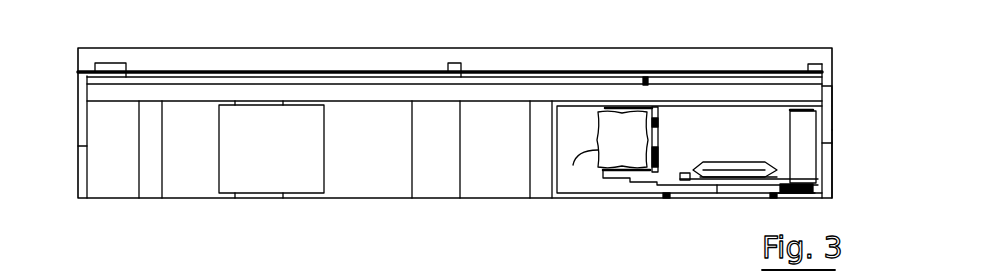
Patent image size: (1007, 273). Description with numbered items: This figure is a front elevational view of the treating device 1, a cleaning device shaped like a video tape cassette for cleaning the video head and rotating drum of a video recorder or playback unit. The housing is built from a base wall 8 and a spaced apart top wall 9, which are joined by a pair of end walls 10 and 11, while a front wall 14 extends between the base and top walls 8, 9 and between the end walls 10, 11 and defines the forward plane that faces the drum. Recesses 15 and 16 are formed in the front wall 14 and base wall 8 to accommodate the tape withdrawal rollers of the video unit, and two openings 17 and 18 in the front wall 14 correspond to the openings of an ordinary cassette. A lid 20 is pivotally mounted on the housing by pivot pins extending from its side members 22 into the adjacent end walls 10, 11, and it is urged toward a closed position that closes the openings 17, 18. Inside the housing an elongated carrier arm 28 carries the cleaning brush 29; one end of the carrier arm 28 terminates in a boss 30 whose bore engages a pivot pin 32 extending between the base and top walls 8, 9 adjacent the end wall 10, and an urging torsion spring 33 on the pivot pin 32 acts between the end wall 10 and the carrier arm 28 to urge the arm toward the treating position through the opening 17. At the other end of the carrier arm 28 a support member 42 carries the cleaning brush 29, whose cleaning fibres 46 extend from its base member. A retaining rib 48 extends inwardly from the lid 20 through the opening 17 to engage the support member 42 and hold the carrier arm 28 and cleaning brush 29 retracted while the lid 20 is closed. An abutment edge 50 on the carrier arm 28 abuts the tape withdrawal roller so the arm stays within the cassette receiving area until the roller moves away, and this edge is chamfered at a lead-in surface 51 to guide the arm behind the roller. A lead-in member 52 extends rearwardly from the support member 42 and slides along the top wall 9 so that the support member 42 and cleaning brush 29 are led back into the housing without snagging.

The treating device 1 is at (93, 215).
The base wall 8 is at (362, 199).
The top wall 9 is at (747, 98).
The end wall 10 is at (828, 170).
The end wall 11 is at (78, 163).
The front wall 14 is at (108, 172).
The recess 15 is at (258, 197).
The recess 16 is at (722, 194).
The opening 17 is at (585, 183).
The opening 18 is at (236, 175).
The lid 20 is at (602, 56).
The side member 22 is at (80, 117).
The carrier arm 28 is at (688, 173).
The cleaning brush 29 is at (613, 135).
The boss 30 is at (803, 132).
The pivot pin 32 is at (832, 100).
The urging torsion spring 33 is at (779, 197).
The support member 42 is at (612, 170).
The cleaning fibres 46 is at (573, 165).
The retaining rib 48 is at (650, 82).
The abutment edge 50 is at (727, 165).
The lead-in surface 51 is at (747, 175).
The lead-in member 52 is at (676, 108).